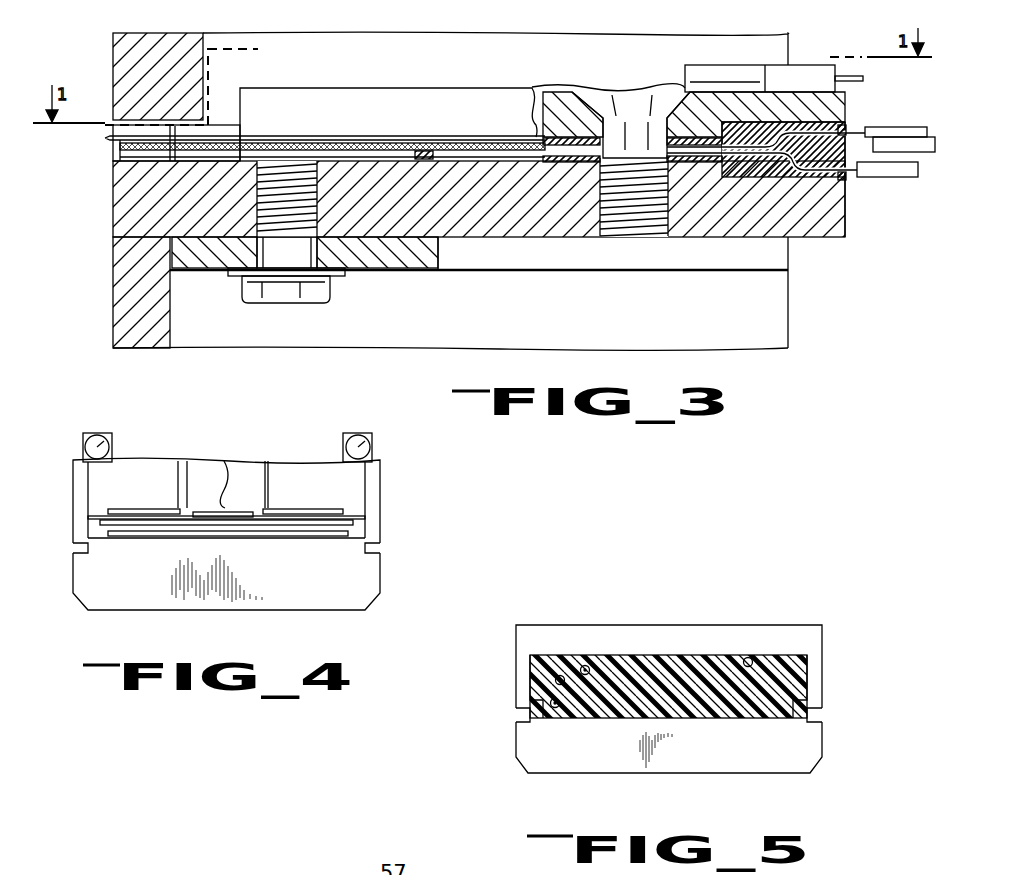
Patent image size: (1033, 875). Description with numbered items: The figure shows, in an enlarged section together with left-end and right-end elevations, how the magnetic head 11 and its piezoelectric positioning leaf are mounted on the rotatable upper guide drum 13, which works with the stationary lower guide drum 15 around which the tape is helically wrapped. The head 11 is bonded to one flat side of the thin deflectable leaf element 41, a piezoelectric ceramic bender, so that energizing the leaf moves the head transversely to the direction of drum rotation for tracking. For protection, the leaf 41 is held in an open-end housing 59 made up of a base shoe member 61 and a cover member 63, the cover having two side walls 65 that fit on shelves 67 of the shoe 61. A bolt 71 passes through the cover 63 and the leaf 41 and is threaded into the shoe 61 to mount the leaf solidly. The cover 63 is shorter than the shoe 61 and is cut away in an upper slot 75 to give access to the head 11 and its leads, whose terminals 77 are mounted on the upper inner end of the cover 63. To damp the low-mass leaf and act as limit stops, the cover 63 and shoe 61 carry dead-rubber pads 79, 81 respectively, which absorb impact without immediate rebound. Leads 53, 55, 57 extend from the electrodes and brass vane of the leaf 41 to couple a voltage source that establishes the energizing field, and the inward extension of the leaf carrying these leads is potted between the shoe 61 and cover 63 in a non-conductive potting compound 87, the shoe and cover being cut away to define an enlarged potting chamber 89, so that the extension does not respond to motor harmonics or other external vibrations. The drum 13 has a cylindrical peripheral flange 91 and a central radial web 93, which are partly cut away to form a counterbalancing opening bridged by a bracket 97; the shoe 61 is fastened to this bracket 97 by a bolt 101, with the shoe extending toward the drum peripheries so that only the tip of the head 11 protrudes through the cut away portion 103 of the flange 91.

In FIG. 3, the head 11 is at (107, 138).
In FIG. 4, the head 11 is at (234, 520).
In FIG. 3, the upper guide drum 13 is at (404, 287).
In FIG. 3, the lower guide drum 15 is at (110, 57).
In FIG. 3, the leaf element 41 is at (330, 143).
In FIG. 4, the leaf element 41 is at (142, 512).
In FIG. 3, the lead 53 is at (880, 127).
In FIG. 5, the lead 53 is at (585, 666).
In FIG. 3, the lead 55 is at (915, 137).
In FIG. 5, the lead 55 is at (563, 685).
In FIG. 3, the lead 57 is at (897, 178).
In FIG. 5, the lead 57 is at (555, 708).
In FIG. 4, the housing 59 is at (395, 476).
In FIG. 5, the housing 59 is at (836, 658).
In FIG. 3, the base shoe member 61 is at (488, 228).
In FIG. 4, the base shoe member 61 is at (380, 578).
In FIG. 5, the base shoe member 61 is at (516, 745).
In FIG. 3, the cover member 63 is at (502, 86).
In FIG. 4, the cover member 63 is at (378, 466).
In FIG. 5, the cover member 63 is at (657, 625).
In FIG. 4, the side walls 65 is at (73, 521).
In FIG. 5, the side walls 65 is at (516, 691).
In FIG. 4, the shelves 67 is at (82, 552).
In FIG. 5, the shelves 67 is at (520, 715).
In FIG. 3, the bolt 71 is at (632, 92).
In FIG. 3, the upper slot 75 is at (410, 90).
In FIG. 4, the upper slot 75 is at (265, 487).
In FIG. 3, the terminals 77 is at (813, 89).
In FIG. 4, the terminals 77 is at (97, 436).
In FIG. 3, the dead-rubber pad 79 is at (427, 151).
In FIG. 4, the dead-rubber pad 79 is at (118, 509).
In FIG. 3, the dead-rubber pad 81 is at (435, 155).
In FIG. 4, the dead-rubber pad 81 is at (136, 537).
In FIG. 3, the potting compound 87 is at (757, 175).
In FIG. 5, the potting compound 87 is at (717, 668).
In FIG. 3, the potting chamber 89 is at (847, 125).
In FIG. 5, the potting chamber 89 is at (757, 705).
In FIG. 3, the peripheral flange 91 is at (112, 290).
In FIG. 3, the central radial web 93 is at (594, 320).
In FIG. 3, the bracket 97 is at (405, 270).
In FIG. 3, the bolt 101 is at (328, 292).
In FIG. 3, the cut away portion 103 is at (113, 152).